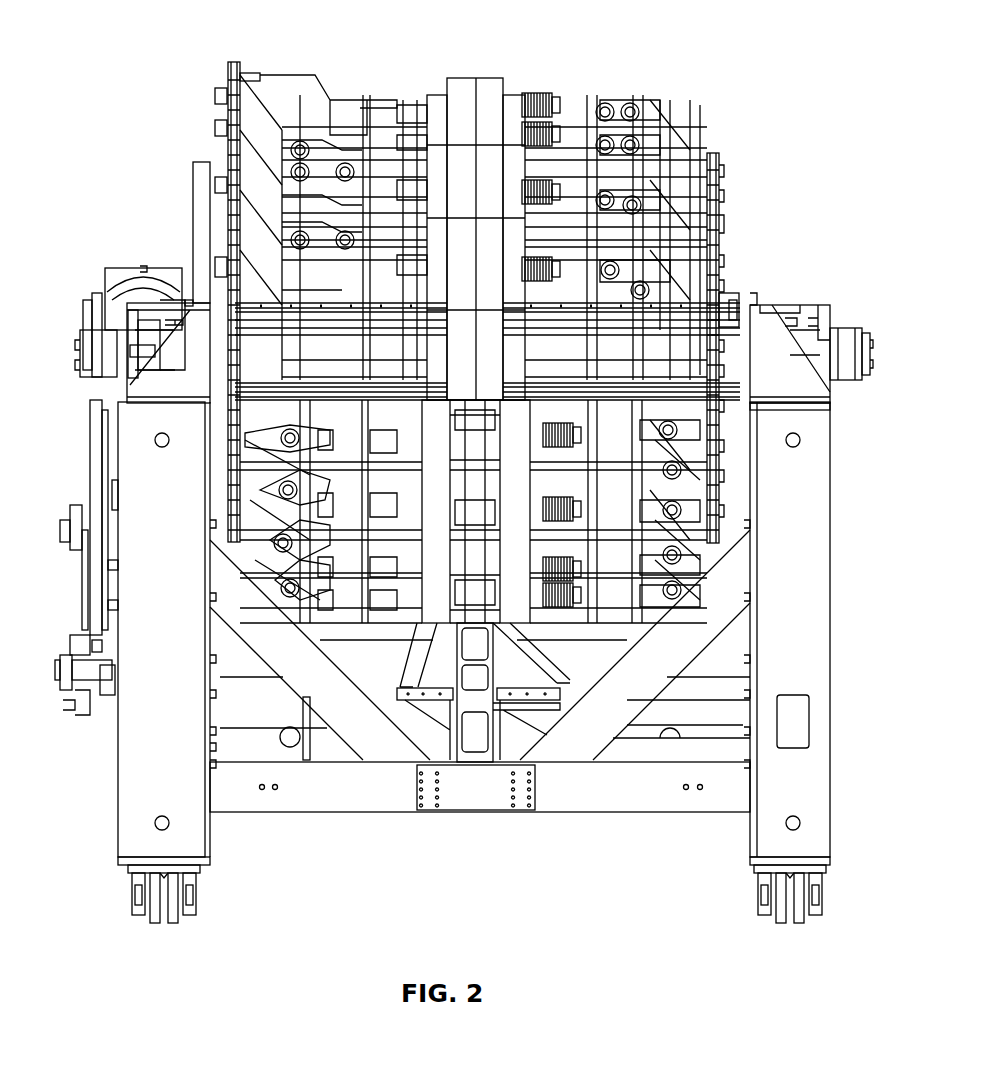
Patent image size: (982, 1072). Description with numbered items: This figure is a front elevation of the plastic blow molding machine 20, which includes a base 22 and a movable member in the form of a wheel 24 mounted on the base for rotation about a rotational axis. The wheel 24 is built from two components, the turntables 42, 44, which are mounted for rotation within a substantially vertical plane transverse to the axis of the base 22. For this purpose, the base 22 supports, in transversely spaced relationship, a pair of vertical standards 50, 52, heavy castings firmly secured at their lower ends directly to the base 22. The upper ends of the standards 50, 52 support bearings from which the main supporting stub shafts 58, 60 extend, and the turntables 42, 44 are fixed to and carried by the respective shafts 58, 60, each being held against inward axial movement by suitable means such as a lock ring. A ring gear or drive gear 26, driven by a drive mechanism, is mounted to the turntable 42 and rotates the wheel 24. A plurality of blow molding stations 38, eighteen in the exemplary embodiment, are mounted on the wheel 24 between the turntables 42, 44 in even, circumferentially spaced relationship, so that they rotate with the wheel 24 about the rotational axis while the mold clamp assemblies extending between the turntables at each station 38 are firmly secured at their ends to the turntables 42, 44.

The plastic blow molding machine 20 is at (188, 35).
The base 22 is at (832, 508).
The wheel 24 is at (740, 190).
The ring gear 26 is at (200, 185).
The blow molding station 38 is at (486, 78).
The turntable 42 is at (225, 220).
The turntable 44 is at (723, 268).
The vertical standard 50 is at (150, 387).
The vertical standard 52 is at (822, 392).
The stub shaft 58 is at (97, 344).
The stub shaft 60 is at (847, 337).